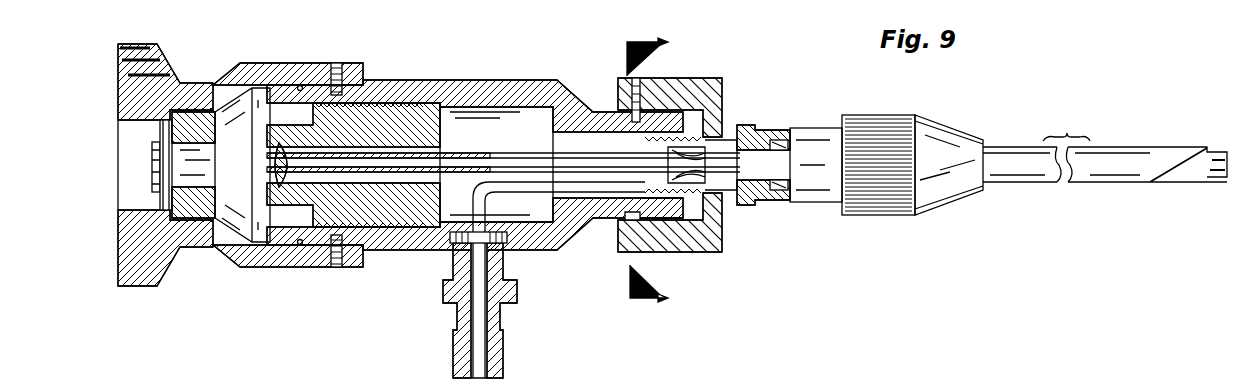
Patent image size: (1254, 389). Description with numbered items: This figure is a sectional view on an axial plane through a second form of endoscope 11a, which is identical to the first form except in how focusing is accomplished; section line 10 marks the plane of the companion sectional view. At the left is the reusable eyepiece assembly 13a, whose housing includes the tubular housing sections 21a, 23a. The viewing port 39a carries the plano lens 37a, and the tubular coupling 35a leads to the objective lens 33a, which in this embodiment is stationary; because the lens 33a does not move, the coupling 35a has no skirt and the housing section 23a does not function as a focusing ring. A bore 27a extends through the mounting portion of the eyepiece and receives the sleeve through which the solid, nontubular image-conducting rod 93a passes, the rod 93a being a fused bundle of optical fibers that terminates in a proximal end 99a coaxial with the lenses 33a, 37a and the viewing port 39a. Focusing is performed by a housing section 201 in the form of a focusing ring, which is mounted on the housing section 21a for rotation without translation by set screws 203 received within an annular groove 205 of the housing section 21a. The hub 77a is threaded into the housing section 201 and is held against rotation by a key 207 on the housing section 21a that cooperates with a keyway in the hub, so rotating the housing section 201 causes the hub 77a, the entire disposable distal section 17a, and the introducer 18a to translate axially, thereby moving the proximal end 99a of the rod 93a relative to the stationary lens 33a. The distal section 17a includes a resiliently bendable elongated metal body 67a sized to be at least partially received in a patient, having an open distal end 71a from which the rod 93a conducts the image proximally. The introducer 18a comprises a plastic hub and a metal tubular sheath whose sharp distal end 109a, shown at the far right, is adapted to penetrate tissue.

The viewing port 39a is at (148, 147).
The plano lens 37a is at (152, 167).
The tubular coupling 35a is at (215, 215).
The objective lens 33a is at (280, 162).
The proximal end of the image-conducting rod 99a is at (358, 160).
The image-conducting rod 93a is at (404, 243).
The housing section 23a is at (352, 30).
The eyepiece assembly 13a is at (418, 82).
The endoscope 11a is at (448, 137).
The housing section 21a is at (530, 82).
The bore 27a is at (545, 132).
The section line 10 is at (624, 174).
The housing section 201 is at (703, 76).
The set screws 203 is at (636, 88).
The annular groove 205 is at (623, 221).
The key 207 is at (722, 113).
The hub 77a is at (745, 128).
The elongated body 67a is at (773, 190).
The distal section 17a is at (831, 118).
The introducer 18a is at (990, 90).
The distal end 71a is at (1220, 162).
The distal end of the sheath 109a is at (1205, 148).